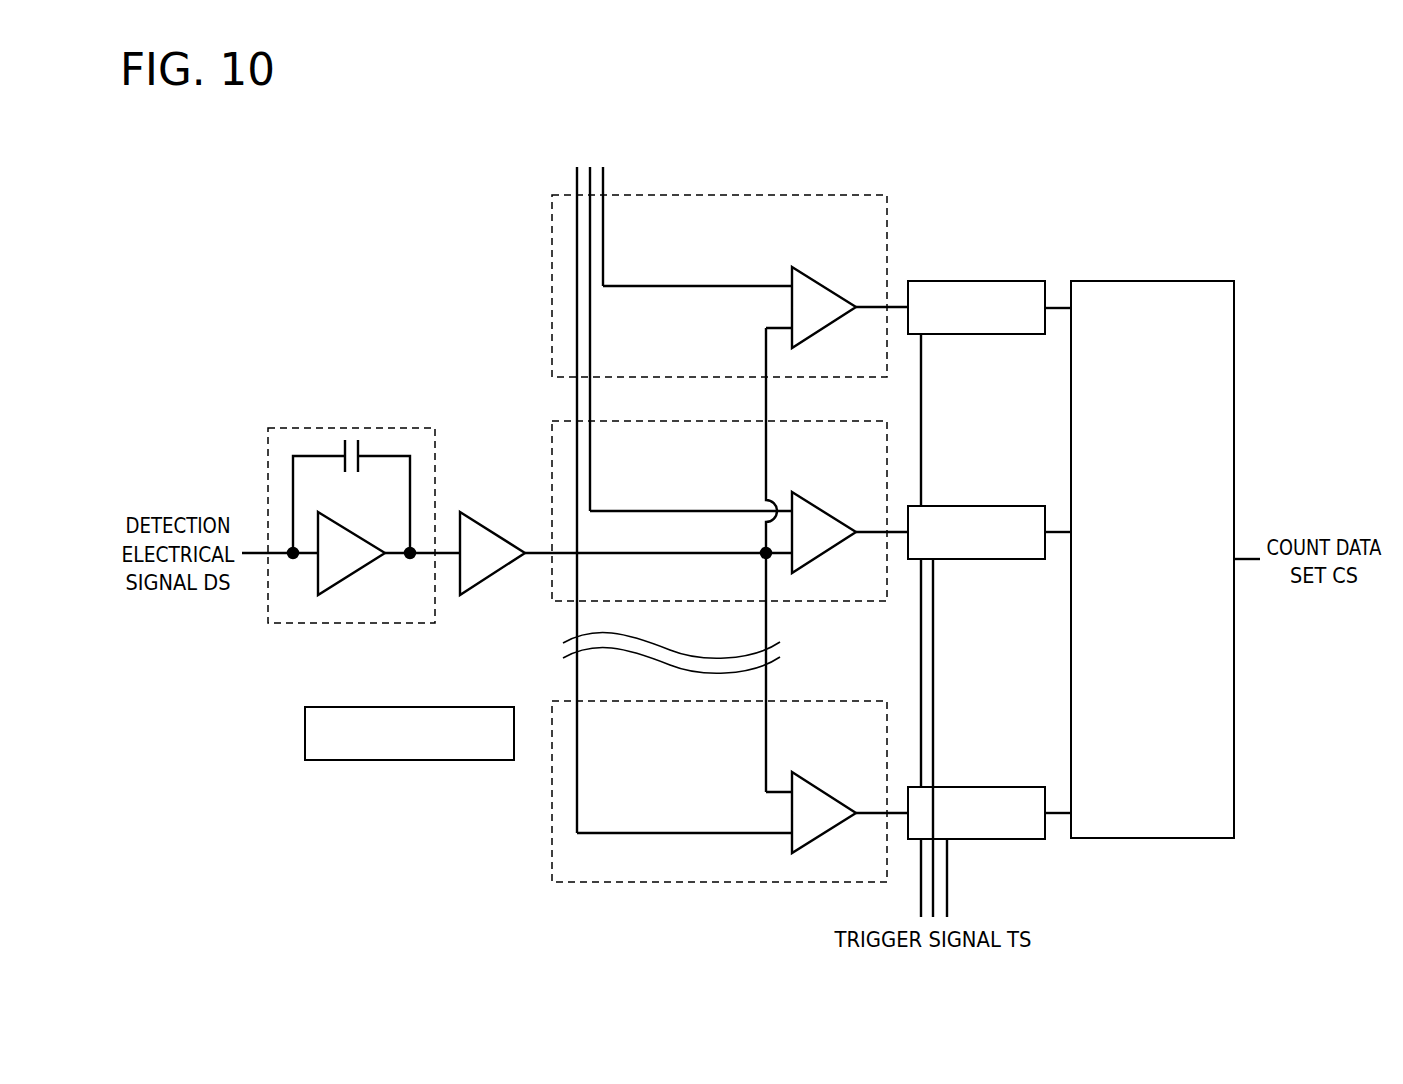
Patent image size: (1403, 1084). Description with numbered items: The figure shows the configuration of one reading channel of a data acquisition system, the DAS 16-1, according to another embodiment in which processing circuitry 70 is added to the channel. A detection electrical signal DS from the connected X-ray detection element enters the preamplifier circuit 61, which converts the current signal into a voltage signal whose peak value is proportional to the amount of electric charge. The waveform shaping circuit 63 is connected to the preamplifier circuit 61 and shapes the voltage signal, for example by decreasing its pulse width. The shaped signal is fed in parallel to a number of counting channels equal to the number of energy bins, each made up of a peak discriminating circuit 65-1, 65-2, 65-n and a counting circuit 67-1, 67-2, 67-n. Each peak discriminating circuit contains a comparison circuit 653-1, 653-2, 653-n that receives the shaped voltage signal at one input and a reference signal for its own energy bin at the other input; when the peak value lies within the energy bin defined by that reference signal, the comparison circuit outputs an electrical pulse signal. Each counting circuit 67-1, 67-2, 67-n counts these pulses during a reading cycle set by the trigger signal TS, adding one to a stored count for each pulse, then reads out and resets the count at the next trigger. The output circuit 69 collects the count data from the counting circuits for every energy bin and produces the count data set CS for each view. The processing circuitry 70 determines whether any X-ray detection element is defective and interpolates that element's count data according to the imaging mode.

The DAS 16-1 is at (783, 134).
The preamplifier circuit 61 is at (403, 414).
The waveform shaping circuit 63 is at (497, 523).
The peak discriminating circuit 65-1 is at (730, 268).
The peak discriminating circuit 65-2 is at (730, 493).
The peak discriminating circuit 65-n is at (730, 774).
The comparison circuit 653-1 is at (829, 283).
The comparison circuit 653-2 is at (829, 508).
The comparison circuit 653-n is at (829, 789).
The counting circuit 67-1 is at (967, 280).
The counting circuit 67-2 is at (967, 505).
The counting circuit 67-n is at (967, 786).
The output circuit 69 is at (1182, 280).
The processing circuitry 70 is at (463, 707).